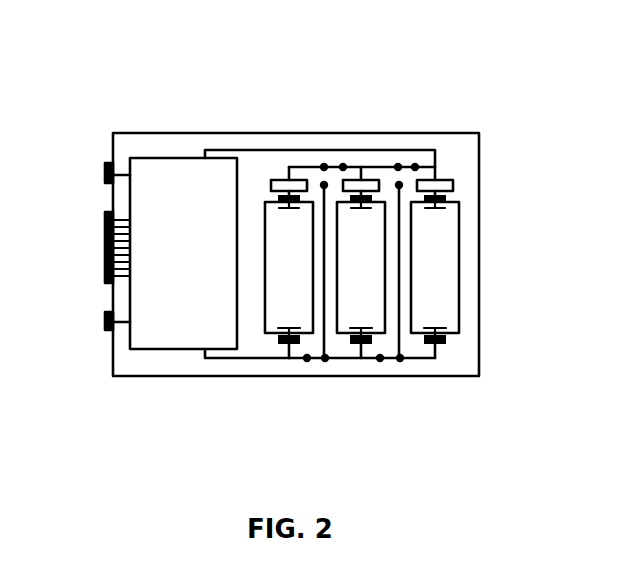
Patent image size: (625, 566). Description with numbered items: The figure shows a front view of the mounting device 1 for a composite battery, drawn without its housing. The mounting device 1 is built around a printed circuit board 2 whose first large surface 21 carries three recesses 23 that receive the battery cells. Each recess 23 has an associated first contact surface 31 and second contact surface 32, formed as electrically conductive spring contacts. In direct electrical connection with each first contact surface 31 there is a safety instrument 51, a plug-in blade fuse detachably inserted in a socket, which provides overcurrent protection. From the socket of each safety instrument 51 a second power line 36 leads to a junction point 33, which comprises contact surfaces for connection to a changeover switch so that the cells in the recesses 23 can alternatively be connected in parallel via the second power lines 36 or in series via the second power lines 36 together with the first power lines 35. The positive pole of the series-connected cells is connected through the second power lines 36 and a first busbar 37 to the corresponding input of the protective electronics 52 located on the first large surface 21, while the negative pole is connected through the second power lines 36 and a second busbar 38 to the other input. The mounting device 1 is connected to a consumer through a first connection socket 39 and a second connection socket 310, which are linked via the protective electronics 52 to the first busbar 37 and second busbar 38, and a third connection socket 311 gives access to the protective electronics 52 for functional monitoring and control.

The mounting device 1 is at (508, 68).
The printed circuit board 2 is at (480, 377).
The first large surface 21 is at (166, 362).
The recess 23 is at (433, 277).
The first contact surface 31 is at (446, 197).
The second contact surface 32 is at (447, 338).
The junction point 33 is at (406, 173).
The first power line 35 is at (325, 335).
The second power line 36 is at (372, 172).
The first busbar 37 is at (267, 148).
The second busbar 38 is at (242, 360).
The first connection socket 39 is at (105, 170).
The safety instrument 51 is at (453, 183).
The protective electronics 52 is at (172, 197).
The second connection socket 310 is at (103, 332).
The third connection socket 311 is at (103, 248).